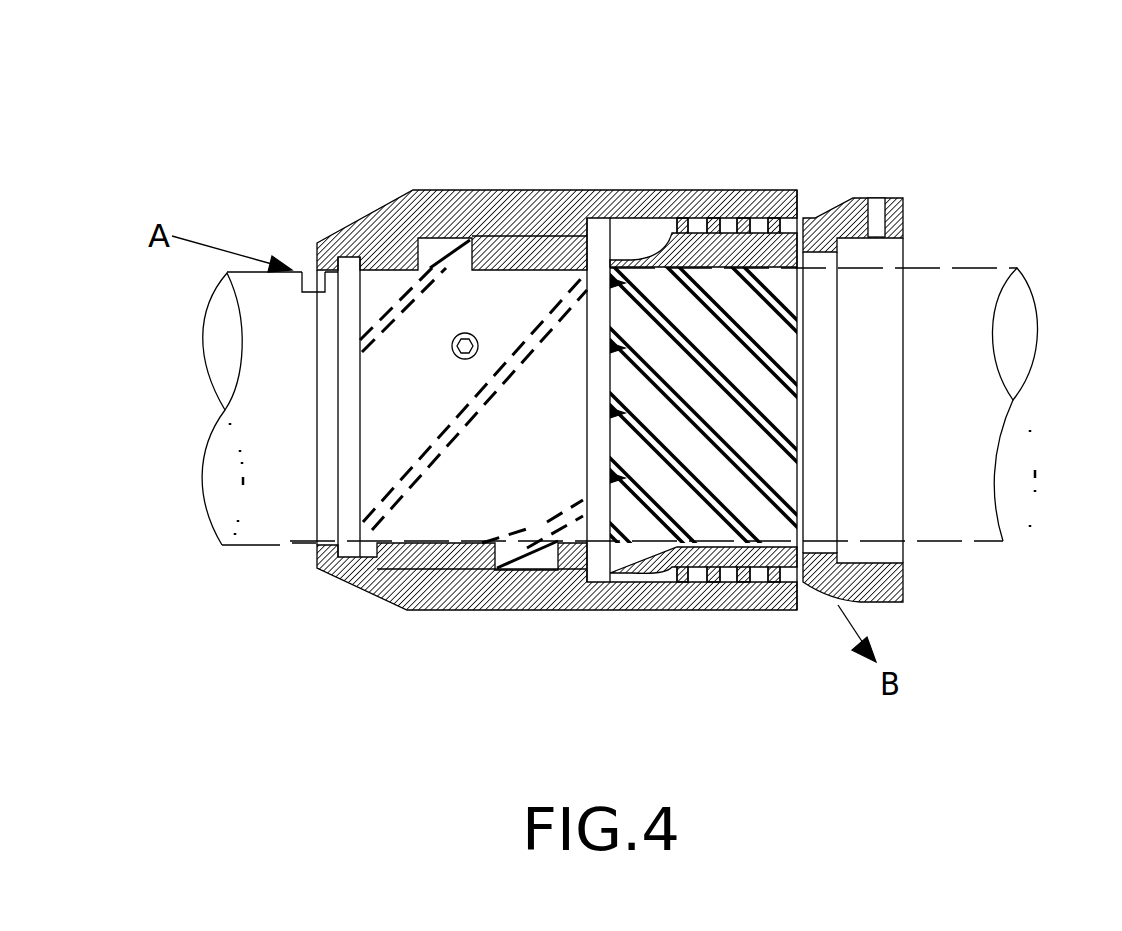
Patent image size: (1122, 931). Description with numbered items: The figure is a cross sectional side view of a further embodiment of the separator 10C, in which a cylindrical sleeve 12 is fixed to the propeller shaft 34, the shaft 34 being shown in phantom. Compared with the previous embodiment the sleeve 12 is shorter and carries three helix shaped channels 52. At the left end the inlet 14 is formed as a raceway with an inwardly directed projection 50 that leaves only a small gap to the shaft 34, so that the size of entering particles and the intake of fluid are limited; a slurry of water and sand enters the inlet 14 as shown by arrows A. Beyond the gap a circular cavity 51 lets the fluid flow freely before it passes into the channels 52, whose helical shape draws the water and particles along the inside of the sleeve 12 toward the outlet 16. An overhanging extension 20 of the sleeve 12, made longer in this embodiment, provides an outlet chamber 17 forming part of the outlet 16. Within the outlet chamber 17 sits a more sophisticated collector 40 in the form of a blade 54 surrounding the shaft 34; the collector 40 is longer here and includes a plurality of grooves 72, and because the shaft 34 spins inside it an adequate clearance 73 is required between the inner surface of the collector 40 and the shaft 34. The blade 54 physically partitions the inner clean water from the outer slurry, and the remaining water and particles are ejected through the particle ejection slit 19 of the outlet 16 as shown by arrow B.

The separator 10C is at (304, 136).
The sleeve 12 is at (513, 191).
The inlet 14 is at (317, 546).
The outlet 16 is at (676, 650).
The outlet chamber 17 is at (608, 570).
The particle ejection slit 19 is at (813, 600).
The extension 20 is at (727, 610).
The propeller shaft 34 is at (292, 414).
The collector 40 is at (893, 93).
The projection 50 is at (300, 278).
The circular cavity 51 is at (347, 556).
The helix shaped channel 52 is at (412, 278).
The blade 54 is at (615, 262).
The grooves 72 is at (765, 372).
The clearance 73 is at (758, 219).